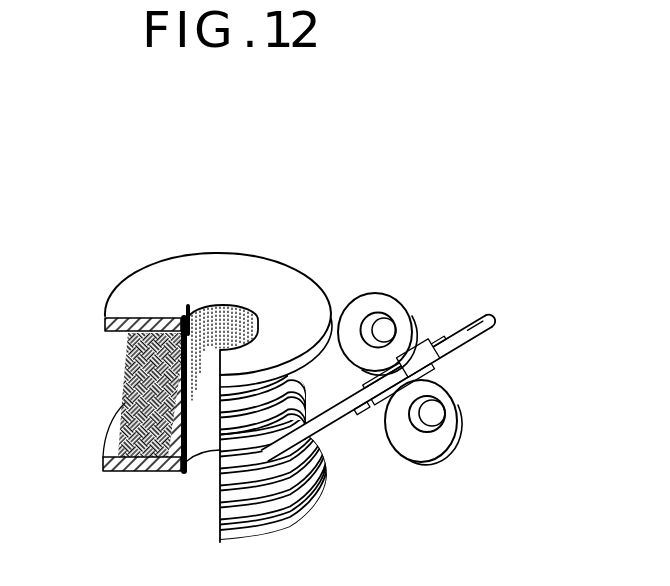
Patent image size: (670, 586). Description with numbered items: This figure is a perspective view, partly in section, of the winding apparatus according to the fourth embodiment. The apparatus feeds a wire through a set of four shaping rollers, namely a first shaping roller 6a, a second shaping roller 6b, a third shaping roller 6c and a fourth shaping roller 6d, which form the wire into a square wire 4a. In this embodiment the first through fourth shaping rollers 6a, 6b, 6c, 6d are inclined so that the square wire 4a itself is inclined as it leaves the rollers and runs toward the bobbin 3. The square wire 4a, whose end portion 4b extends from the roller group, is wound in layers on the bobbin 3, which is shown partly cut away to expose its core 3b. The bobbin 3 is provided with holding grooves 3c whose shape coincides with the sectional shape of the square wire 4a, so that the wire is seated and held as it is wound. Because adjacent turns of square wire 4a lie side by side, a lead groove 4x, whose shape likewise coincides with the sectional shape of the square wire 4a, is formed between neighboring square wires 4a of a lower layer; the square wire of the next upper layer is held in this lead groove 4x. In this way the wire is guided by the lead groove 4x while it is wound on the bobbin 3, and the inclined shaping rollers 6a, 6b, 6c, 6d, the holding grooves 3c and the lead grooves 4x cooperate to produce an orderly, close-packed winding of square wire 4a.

The bobbin 3 is at (192, 268).
The core of spool 3b is at (196, 358).
The holding groove 3c is at (177, 320).
The lead groove 4x is at (123, 404).
The square wire 4a is at (343, 419).
The wire tip 4b is at (494, 318).
The first shaping roller 6a is at (378, 306).
The second shaping roller 6b is at (448, 357).
The third shaping roller 6c is at (445, 443).
The fourth shaping roller 6d is at (384, 410).